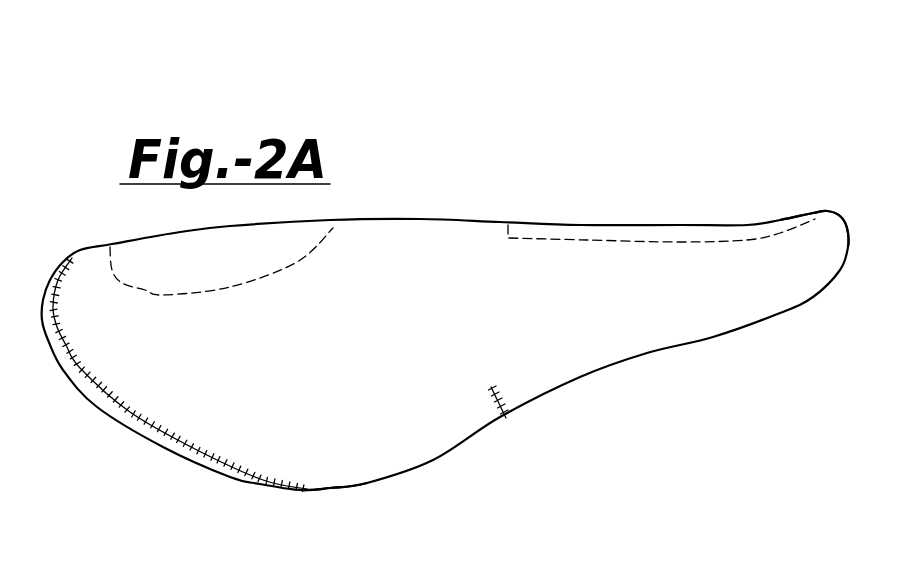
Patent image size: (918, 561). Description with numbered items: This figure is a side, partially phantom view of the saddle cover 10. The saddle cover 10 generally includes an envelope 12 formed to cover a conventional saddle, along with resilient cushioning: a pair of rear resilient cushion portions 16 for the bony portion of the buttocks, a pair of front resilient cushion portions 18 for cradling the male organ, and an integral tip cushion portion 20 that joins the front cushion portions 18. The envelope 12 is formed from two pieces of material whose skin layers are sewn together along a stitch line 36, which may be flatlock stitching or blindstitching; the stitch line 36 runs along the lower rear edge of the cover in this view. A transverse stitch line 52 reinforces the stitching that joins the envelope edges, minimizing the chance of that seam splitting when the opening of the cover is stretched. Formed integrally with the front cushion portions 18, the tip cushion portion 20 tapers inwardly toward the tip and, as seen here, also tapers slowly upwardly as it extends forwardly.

The saddle cover 10 is at (620, 207).
The envelope 12 is at (373, 482).
The rear resilient cushion portion 16 is at (277, 270).
The front resilient cushion portion 18 is at (527, 240).
The tip cushion portion 20 is at (780, 222).
The stitch line 36 is at (130, 412).
The transverse stitch line 52 is at (491, 394).